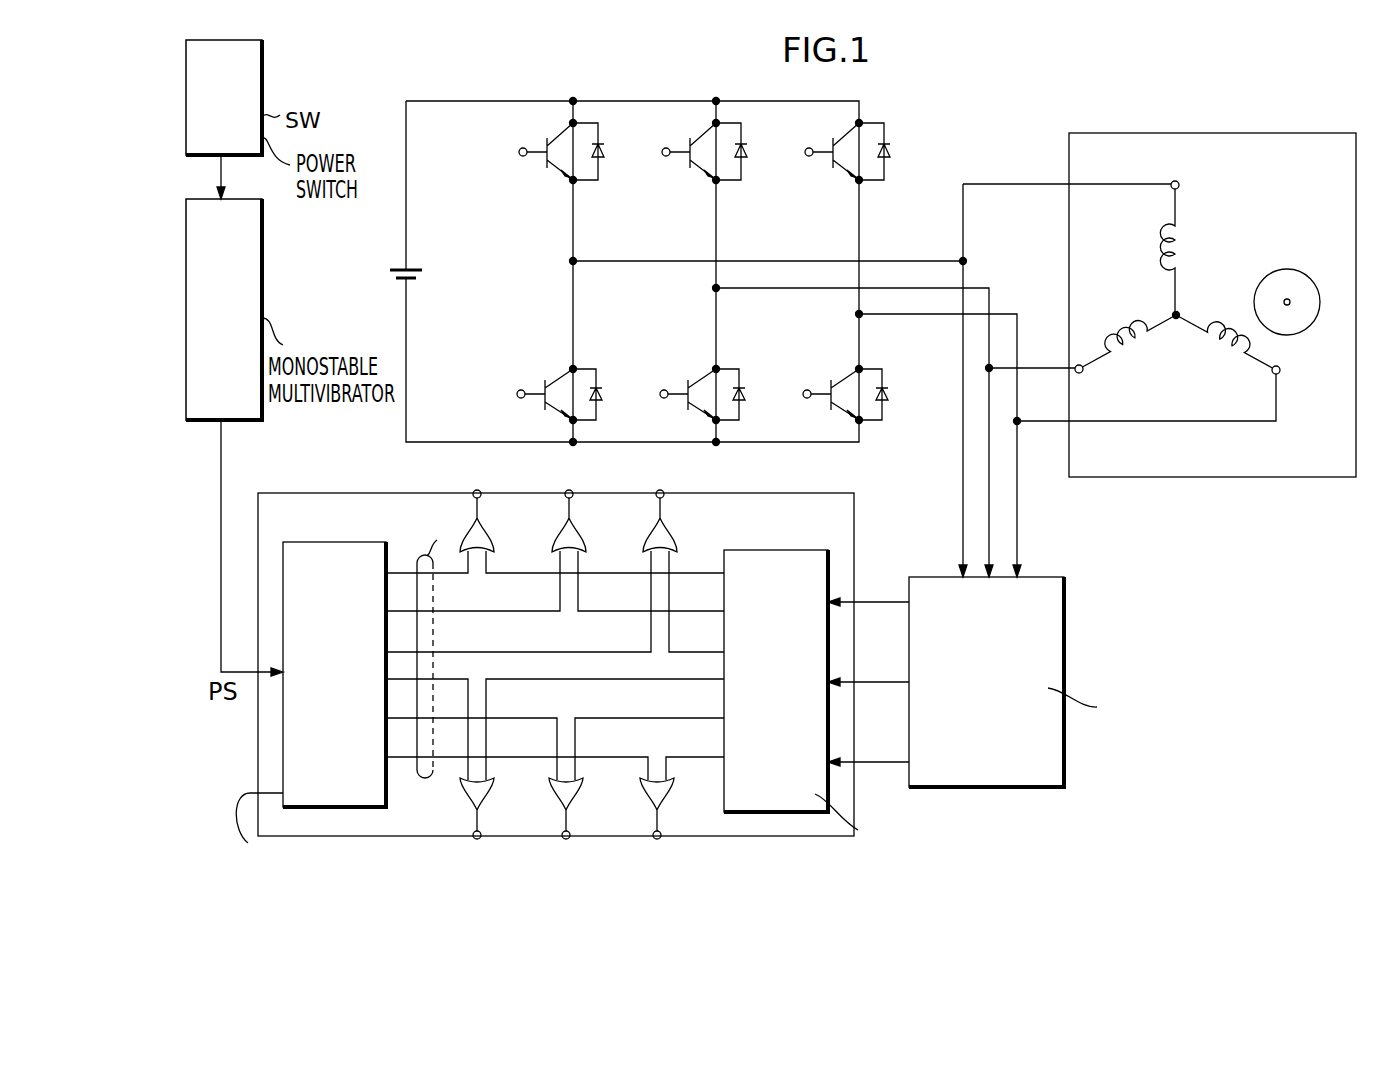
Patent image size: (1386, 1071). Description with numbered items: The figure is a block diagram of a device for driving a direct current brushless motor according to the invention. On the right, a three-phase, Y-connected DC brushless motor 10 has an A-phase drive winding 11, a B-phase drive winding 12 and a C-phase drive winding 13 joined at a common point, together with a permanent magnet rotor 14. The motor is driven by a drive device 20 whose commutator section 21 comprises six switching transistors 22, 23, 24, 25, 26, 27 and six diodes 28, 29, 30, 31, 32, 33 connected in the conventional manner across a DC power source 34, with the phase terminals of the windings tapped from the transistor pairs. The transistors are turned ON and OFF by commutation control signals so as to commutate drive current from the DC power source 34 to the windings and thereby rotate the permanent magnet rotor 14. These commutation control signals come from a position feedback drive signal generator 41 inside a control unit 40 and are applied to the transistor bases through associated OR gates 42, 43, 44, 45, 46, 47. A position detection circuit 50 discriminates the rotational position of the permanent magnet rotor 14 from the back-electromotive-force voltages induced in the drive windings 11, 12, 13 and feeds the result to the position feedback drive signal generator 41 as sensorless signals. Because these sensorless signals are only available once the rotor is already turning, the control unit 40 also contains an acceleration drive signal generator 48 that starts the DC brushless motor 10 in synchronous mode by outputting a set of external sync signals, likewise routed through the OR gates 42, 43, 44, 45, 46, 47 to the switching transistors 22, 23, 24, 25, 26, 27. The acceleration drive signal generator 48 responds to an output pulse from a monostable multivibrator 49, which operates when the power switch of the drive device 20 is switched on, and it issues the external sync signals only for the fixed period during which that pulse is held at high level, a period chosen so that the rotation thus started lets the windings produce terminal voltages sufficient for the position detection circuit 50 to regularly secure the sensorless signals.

The DC brushless motor 10 is at (1235, 477).
The A-phase drive winding 11 is at (1168, 253).
The B-phase drive winding 12 is at (1140, 355).
The C-phase drive winding 13 is at (1208, 352).
The permanent magnet rotor 14 is at (1296, 270).
The drive device 20 is at (958, 119).
The commutator section 21 is at (552, 95).
The switching transistor 22 is at (547, 167).
The switching transistor 23 is at (690, 167).
The switching transistor 24 is at (833, 167).
The switching transistor 25 is at (541, 386).
The switching transistor 26 is at (684, 386).
The switching transistor 27 is at (827, 386).
The diode 28 is at (604, 152).
The diode 29 is at (747, 152).
The diode 30 is at (890, 150).
The diode 31 is at (610, 376).
The diode 32 is at (739, 385).
The diode 33 is at (888, 392).
The DC power source 34 is at (395, 279).
The control unit 40 is at (305, 474).
The position feedback drive signal generator 41 is at (783, 536).
The OR gate 42 is at (496, 545).
The OR gate 43 is at (588, 545).
The OR gate 44 is at (679, 545).
The OR gate 45 is at (490, 795).
The OR gate 46 is at (579, 795).
The OR gate 47 is at (670, 795).
The acceleration drive signal generator 48 is at (383, 783).
The monostable multivibrator 49 is at (262, 252).
The position detection circuit 50 is at (1064, 620).